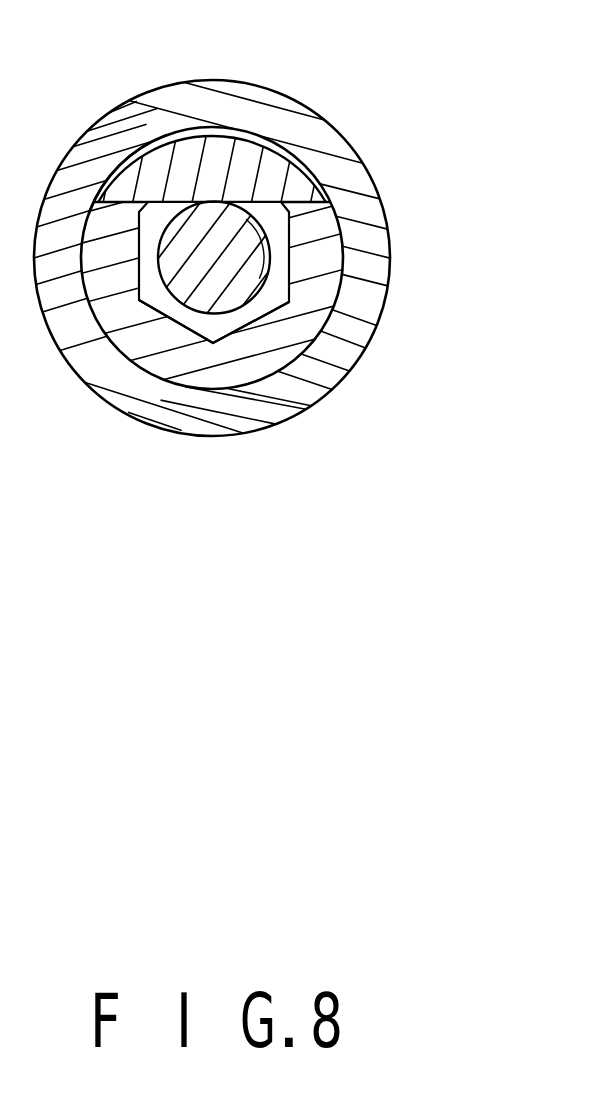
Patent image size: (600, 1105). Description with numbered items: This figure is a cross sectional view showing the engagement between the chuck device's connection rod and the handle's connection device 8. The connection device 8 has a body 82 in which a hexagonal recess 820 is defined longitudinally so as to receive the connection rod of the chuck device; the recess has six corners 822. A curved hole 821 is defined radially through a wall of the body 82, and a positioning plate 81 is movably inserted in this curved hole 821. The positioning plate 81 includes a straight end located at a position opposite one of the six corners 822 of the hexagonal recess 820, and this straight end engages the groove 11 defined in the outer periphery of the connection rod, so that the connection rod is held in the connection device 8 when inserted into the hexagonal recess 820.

The connection device 8 is at (300, 393).
The positioning plate 81 is at (241, 165).
The body 82 is at (138, 340).
The hexagonal recess 820 is at (308, 262).
The curved hole 821 is at (140, 155).
The corners 822 is at (289, 302).
The groove 11 is at (258, 210).